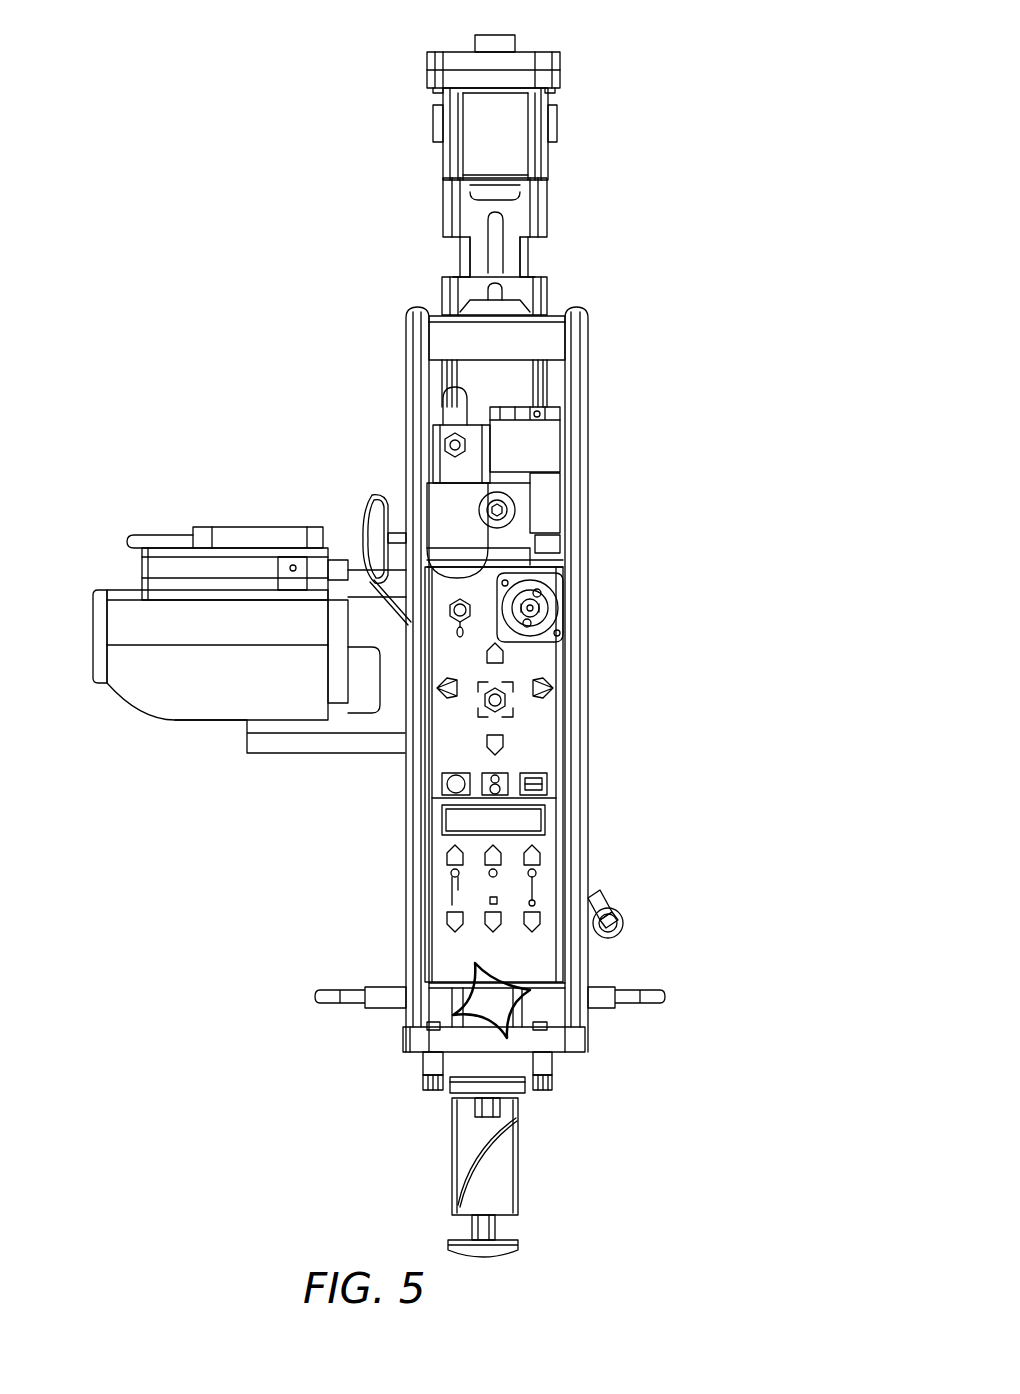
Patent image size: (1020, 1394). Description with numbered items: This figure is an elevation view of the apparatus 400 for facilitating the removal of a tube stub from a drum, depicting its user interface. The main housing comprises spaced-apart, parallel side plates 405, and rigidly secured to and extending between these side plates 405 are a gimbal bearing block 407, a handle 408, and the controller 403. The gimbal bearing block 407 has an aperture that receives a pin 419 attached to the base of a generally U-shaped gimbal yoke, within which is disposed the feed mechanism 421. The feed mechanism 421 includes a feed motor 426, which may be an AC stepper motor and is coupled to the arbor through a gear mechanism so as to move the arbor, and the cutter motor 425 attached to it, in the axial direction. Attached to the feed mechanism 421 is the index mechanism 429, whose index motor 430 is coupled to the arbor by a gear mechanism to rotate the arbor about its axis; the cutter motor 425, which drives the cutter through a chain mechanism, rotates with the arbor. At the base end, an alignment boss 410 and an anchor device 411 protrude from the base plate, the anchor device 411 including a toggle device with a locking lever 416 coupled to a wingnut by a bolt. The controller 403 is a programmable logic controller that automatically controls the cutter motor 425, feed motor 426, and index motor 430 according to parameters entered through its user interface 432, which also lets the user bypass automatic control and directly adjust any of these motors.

The apparatus 400 is at (713, 90).
The index mechanism 429 is at (572, 55).
The index motor 430 is at (520, 143).
The feed mechanism 421 is at (540, 252).
The feed motor 426 is at (547, 295).
The handle 408 is at (440, 325).
The side plates 405 is at (407, 373).
The cutter motor 425 is at (208, 528).
The pin 419 is at (513, 502).
The gimbal bearing block 407 is at (555, 520).
The controller 403 is at (547, 660).
The user interface 432 is at (533, 735).
The locking lever 416 is at (617, 943).
The alignment boss 410 is at (452, 1095).
The anchor device 411 is at (523, 1188).